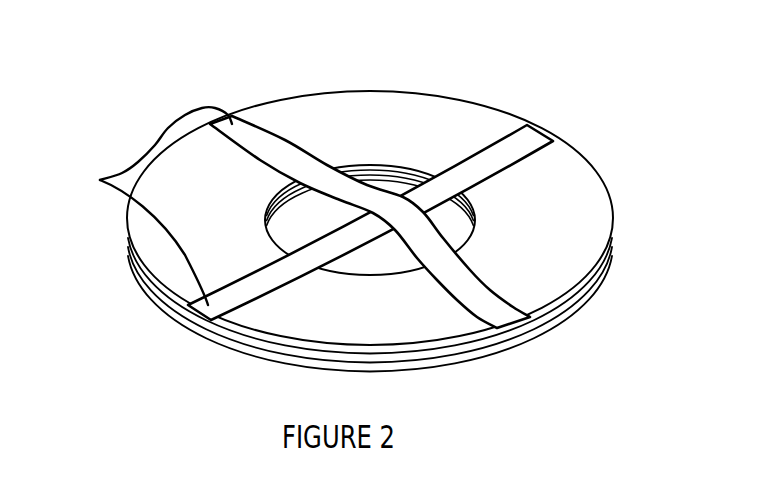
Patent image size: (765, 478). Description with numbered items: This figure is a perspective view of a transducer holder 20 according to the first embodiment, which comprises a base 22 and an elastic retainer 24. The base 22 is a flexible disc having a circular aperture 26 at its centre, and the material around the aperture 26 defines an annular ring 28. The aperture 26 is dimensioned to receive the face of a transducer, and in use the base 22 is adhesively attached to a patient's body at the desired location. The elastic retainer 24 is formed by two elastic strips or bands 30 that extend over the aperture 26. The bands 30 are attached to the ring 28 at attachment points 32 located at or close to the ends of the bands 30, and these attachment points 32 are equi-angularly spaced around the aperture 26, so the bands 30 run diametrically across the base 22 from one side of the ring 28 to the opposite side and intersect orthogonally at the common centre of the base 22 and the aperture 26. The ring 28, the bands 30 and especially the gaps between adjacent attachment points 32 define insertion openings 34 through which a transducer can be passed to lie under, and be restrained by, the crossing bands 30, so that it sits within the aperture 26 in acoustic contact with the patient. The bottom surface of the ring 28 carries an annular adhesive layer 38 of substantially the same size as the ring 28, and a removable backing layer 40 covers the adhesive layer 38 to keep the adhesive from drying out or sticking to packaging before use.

The transducer holder 20 is at (132, 74).
The base 22 is at (403, 253).
The elastic retainer 24 is at (420, 187).
The circular aperture 26 is at (338, 258).
The annular ring 28 is at (392, 330).
The elastic bands 30 is at (303, 252).
The attachment points 32 is at (100, 180).
The insertion openings 34 is at (352, 266).
The adhesive layer 38 is at (516, 334).
The removable backing layer 40 is at (562, 326).